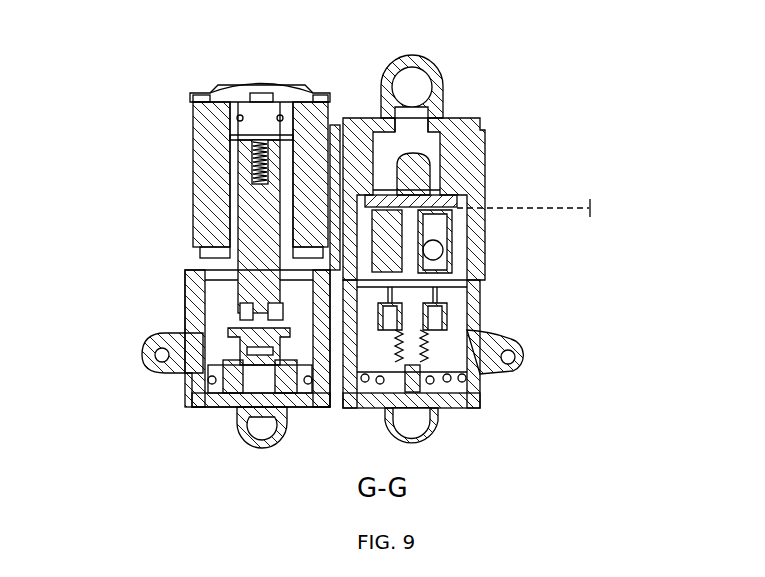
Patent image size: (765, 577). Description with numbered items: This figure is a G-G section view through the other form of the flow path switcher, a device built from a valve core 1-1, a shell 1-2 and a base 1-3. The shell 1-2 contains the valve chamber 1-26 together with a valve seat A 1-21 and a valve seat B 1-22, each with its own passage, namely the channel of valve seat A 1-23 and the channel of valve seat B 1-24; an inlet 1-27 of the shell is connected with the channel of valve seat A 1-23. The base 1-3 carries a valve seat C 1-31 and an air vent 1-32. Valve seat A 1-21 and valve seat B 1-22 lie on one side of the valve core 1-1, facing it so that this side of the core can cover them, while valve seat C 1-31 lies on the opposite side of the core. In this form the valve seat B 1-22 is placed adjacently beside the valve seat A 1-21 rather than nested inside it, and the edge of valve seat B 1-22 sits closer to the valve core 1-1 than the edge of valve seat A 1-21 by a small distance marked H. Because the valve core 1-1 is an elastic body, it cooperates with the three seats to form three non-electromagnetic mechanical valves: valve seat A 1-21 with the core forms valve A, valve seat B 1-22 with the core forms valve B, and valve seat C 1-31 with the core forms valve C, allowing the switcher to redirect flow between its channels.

The valve core 1-1 is at (450, 167).
The shell 1-2 is at (437, 245).
The base 1-3 is at (480, 117).
The valve seat A 1-21 is at (448, 228).
The valve seat B 1-22 is at (372, 210).
The channel of valve seat A 1-23 is at (452, 268).
The channel of valve seat B 1-24 is at (392, 245).
The valve chamber 1-26 is at (330, 201).
The inlet 1-27 is at (468, 286).
The valve seat C 1-31 is at (368, 173).
The air vent 1-32 is at (412, 97).